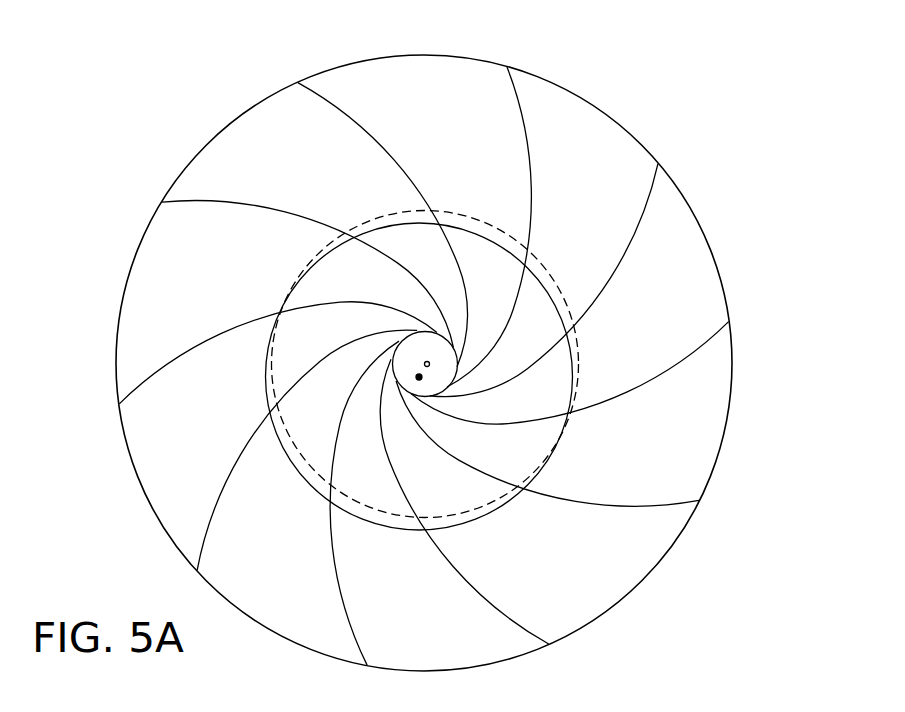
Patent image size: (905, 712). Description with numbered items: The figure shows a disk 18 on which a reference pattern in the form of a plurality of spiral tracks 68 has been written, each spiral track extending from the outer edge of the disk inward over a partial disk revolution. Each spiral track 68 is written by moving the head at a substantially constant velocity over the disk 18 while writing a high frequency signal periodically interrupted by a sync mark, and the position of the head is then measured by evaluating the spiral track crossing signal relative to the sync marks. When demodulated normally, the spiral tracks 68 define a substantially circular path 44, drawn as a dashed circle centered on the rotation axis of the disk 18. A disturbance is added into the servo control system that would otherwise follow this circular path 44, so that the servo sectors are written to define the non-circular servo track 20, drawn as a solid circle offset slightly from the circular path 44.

The disk 18 is at (619, 123).
The non-circular servo track 20 is at (508, 252).
The circular path 44 is at (477, 222).
The spiral tracks 68 is at (428, 366).